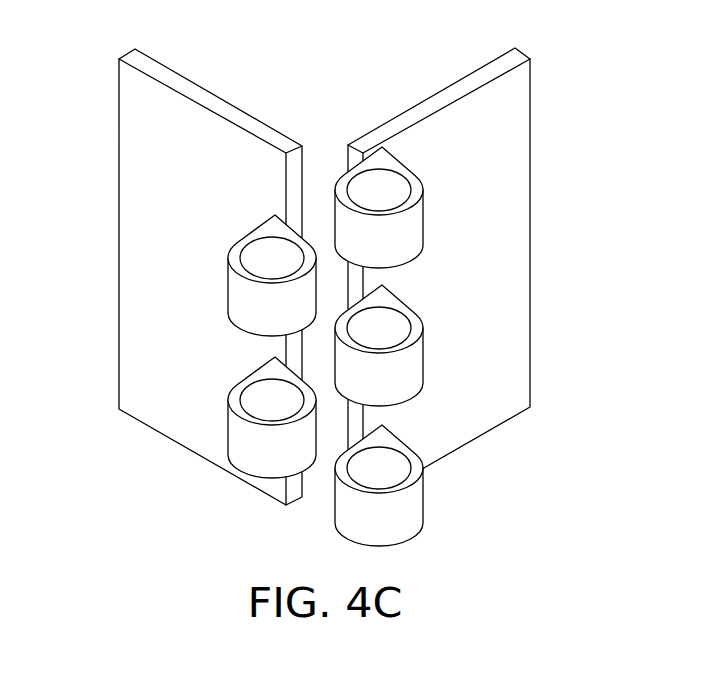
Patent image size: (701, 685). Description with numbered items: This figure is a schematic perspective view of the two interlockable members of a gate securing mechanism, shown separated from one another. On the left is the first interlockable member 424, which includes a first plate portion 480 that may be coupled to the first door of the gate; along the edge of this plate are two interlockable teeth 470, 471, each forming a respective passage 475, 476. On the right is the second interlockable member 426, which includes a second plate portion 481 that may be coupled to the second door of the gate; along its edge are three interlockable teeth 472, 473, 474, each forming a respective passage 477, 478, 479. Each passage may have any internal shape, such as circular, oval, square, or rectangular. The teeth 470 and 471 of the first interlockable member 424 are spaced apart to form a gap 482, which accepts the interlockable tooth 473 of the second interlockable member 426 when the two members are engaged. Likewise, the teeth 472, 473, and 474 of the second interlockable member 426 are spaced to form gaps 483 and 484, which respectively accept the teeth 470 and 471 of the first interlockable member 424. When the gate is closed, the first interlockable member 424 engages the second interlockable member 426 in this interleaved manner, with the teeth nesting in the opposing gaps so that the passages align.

The first interlockable member 424 is at (171, 263).
The second interlockable member 426 is at (480, 262).
The interlockable tooth 470 is at (228, 275).
The interlockable tooth 471 is at (222, 425).
The interlockable tooth 472 is at (422, 207).
The interlockable tooth 473 is at (422, 345).
The interlockable tooth 474 is at (378, 485).
The passage 475 is at (250, 254).
The passage 476 is at (250, 393).
The passage 477 is at (395, 185).
The passage 478 is at (397, 327).
The passage 479 is at (363, 474).
The first plate portion 480 is at (133, 190).
The second plate portion 481 is at (522, 278).
The gap 482 is at (274, 347).
The gap 483 is at (375, 277).
The gap 484 is at (375, 415).